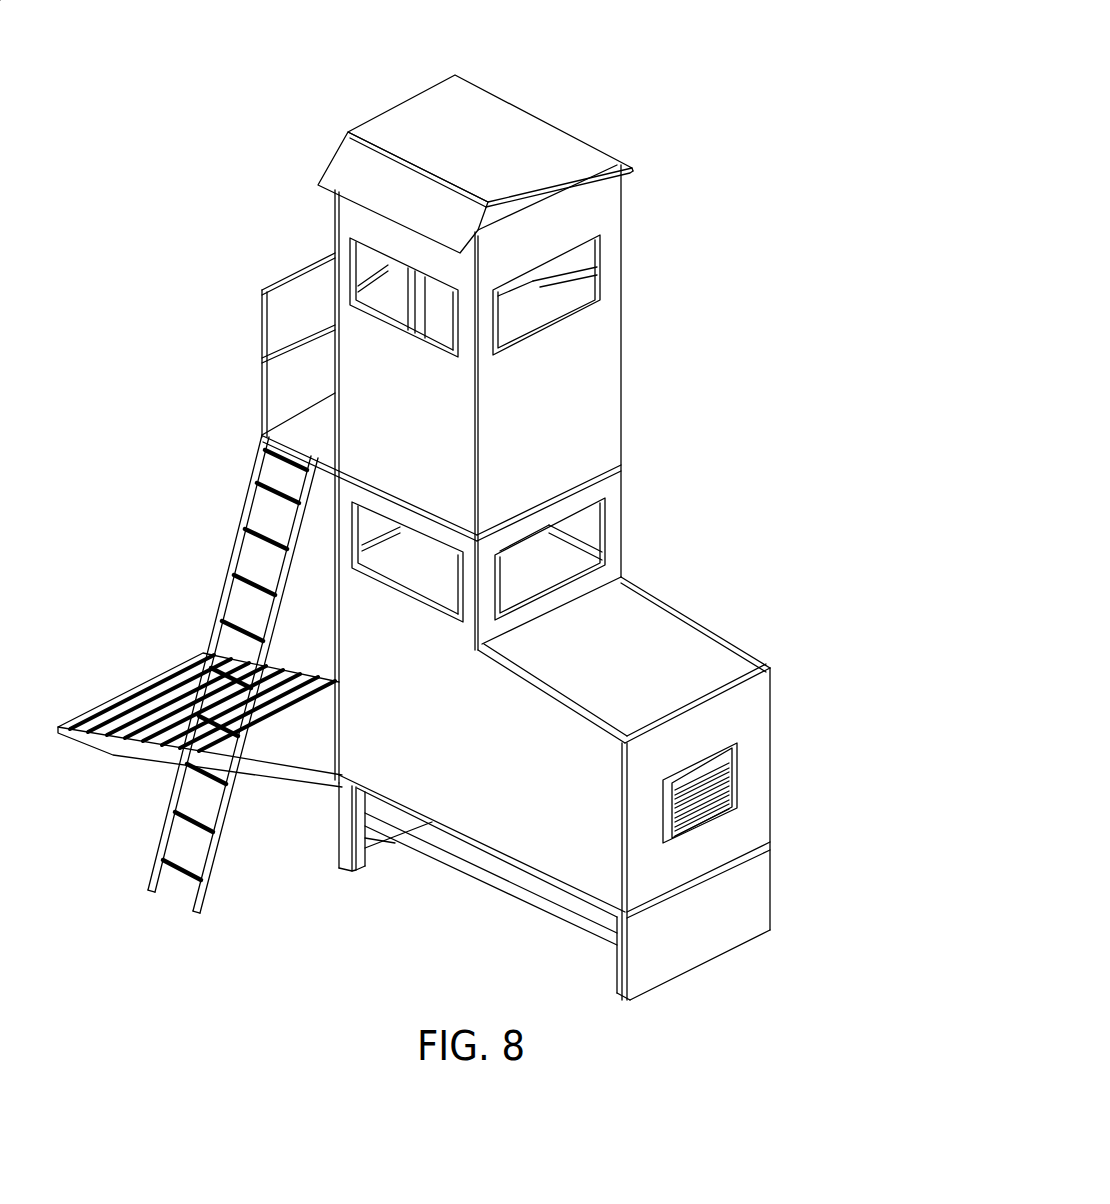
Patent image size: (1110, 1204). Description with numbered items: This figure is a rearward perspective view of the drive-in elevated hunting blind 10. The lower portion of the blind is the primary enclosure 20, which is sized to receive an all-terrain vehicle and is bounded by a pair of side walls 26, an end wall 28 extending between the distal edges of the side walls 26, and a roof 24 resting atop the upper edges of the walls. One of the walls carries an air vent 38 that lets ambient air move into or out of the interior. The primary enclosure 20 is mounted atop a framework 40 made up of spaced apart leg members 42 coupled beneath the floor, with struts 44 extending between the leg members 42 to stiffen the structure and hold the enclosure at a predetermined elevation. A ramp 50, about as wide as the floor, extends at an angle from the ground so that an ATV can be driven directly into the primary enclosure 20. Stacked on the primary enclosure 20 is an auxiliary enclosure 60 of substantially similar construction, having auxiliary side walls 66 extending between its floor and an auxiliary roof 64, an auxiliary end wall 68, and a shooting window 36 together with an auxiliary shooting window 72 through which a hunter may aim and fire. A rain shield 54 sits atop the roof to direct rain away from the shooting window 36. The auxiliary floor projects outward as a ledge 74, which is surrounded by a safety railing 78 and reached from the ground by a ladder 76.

The hunting blind 10 is at (386, 47).
The primary enclosure 20 is at (790, 685).
The roof 24 is at (705, 640).
The side walls 26 is at (543, 835).
The end wall 28 is at (765, 825).
The shooting window 36 is at (605, 535).
The air vent 38 is at (730, 775).
The framework 40 is at (446, 872).
The leg members 42 is at (320, 845).
The struts 44 is at (483, 866).
The ramp 50 is at (200, 729).
The rain shield 54 is at (345, 160).
The auxiliary enclosure 60 is at (648, 308).
The auxiliary roof 64 is at (514, 141).
The auxiliary side walls 66 is at (378, 435).
The auxiliary end wall 68 is at (612, 395).
The auxiliary shooting window 72 is at (600, 272).
The ledge 74 is at (262, 405).
The ladder 76 is at (227, 590).
The safety railing 78 is at (282, 280).